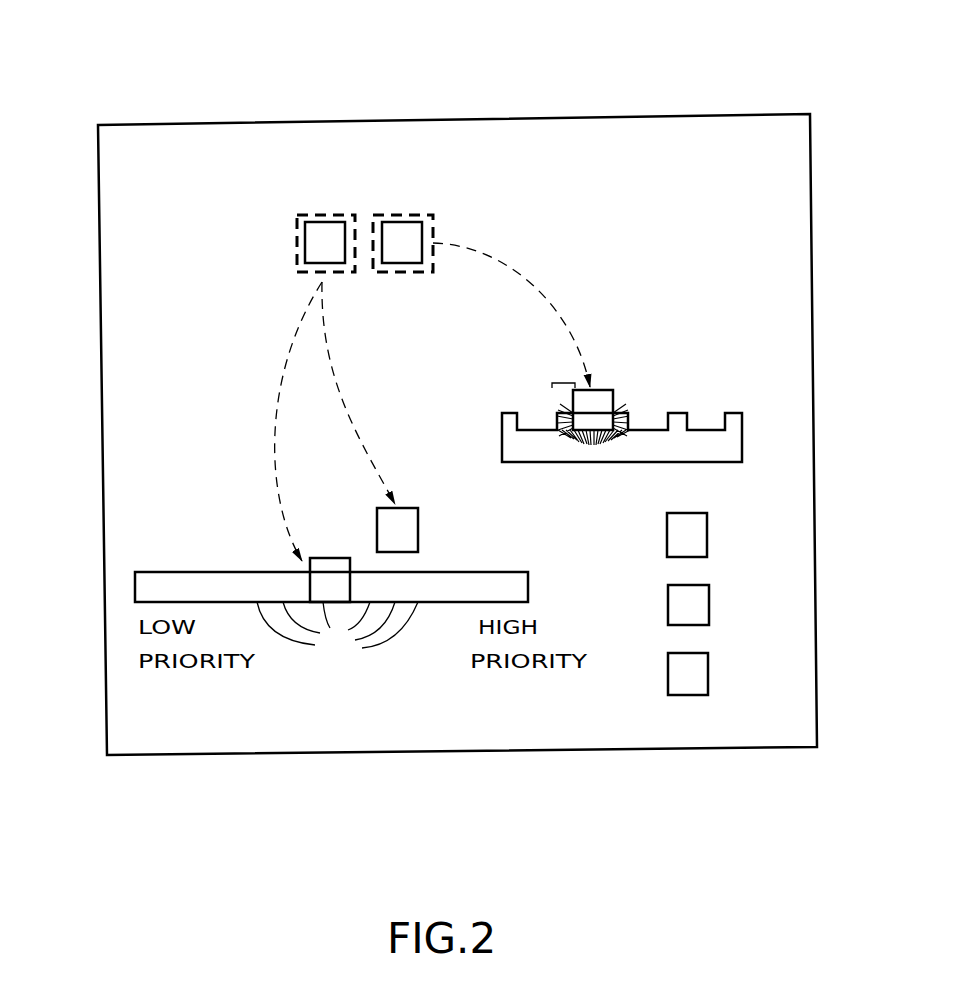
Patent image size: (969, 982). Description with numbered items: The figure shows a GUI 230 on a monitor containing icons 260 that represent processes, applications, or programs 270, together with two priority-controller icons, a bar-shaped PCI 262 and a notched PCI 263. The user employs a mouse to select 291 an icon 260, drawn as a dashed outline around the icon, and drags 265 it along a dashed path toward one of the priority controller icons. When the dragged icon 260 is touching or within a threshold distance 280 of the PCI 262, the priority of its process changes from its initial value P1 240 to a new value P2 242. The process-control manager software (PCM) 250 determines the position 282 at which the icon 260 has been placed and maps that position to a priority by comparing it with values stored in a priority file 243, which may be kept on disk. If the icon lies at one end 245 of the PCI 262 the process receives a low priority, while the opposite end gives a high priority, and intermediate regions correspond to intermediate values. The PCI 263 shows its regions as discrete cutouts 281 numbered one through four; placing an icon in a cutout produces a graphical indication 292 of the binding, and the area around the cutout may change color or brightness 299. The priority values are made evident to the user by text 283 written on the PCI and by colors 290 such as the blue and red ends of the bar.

The GUI 230 is at (377, 117).
The initial priority value P1 240 is at (308, 251).
The new priority value P2 242 is at (308, 585).
The priority file 243 is at (707, 537).
The one end of the PCI 245 is at (135, 580).
The process-control manager software (PCM) 250 is at (709, 612).
The icon 260 is at (309, 239).
The priority-controller icon (PCI) 262 is at (538, 578).
The priority-controller icon (PCI) 263 is at (753, 421).
The drag 265 is at (277, 397).
The processes, applications, or programs 270 is at (708, 688).
The threshold distance 280 is at (413, 560).
The cutouts 281 is at (650, 423).
The position 282 is at (610, 391).
The text 283 is at (598, 466).
The colors 290 is at (180, 571).
The select 291 is at (305, 242).
The graphical indication 292 is at (565, 382).
The change in color or brightness 299 is at (562, 414).